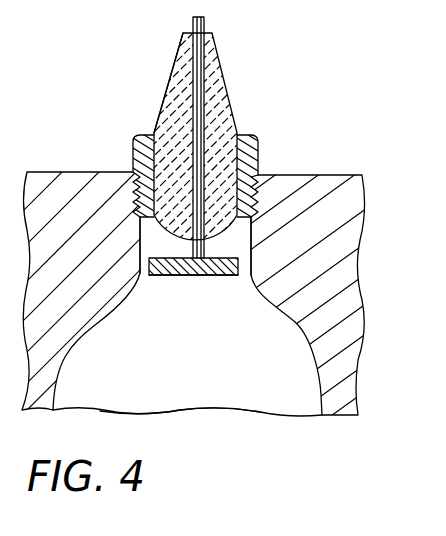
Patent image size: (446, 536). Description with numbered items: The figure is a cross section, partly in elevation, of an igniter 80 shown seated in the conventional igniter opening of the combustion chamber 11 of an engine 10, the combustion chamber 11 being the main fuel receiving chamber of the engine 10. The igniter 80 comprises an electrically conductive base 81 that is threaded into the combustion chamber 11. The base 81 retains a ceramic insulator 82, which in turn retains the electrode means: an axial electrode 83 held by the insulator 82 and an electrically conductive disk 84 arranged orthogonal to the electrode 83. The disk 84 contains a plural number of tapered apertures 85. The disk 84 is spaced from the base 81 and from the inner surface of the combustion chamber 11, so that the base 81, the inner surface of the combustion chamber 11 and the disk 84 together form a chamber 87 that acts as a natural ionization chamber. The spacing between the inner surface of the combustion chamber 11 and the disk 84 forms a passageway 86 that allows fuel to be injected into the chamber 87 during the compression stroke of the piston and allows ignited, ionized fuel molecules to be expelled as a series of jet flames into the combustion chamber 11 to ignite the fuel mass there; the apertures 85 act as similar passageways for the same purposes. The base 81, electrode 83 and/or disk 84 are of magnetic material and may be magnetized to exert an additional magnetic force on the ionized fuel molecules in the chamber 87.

The engine 10 is at (356, 183).
The combustion chamber 11 is at (205, 403).
The igniter 80 is at (232, 80).
The electrically conductive base 81 is at (253, 143).
The ceramic insulator 82 is at (167, 88).
The axial electrode 83 is at (204, 18).
The electrically conductive disk 84 is at (193, 277).
The tapered apertures 85 is at (172, 277).
The passageway 86 is at (244, 273).
The chamber 87 is at (238, 255).